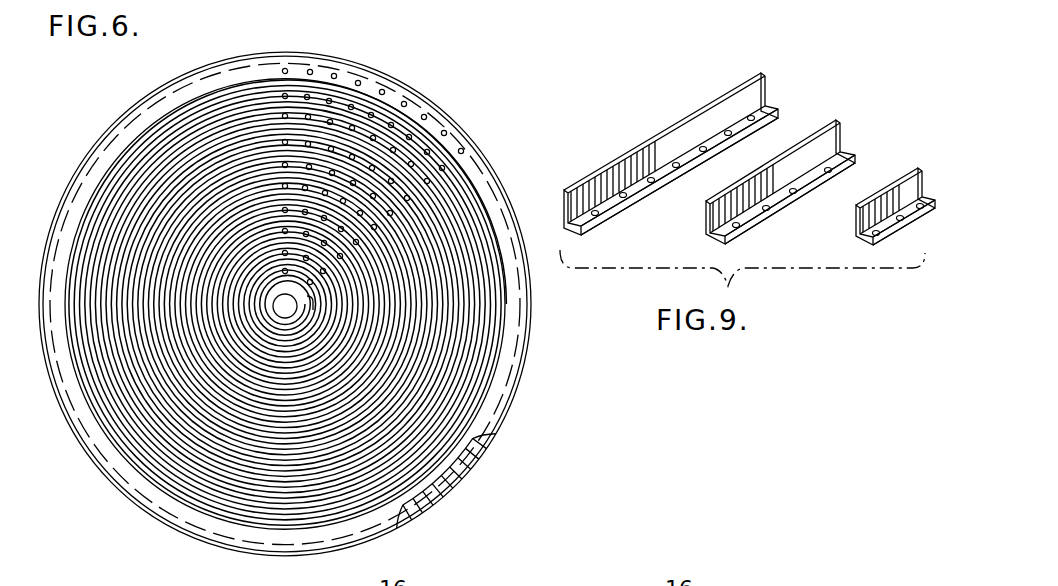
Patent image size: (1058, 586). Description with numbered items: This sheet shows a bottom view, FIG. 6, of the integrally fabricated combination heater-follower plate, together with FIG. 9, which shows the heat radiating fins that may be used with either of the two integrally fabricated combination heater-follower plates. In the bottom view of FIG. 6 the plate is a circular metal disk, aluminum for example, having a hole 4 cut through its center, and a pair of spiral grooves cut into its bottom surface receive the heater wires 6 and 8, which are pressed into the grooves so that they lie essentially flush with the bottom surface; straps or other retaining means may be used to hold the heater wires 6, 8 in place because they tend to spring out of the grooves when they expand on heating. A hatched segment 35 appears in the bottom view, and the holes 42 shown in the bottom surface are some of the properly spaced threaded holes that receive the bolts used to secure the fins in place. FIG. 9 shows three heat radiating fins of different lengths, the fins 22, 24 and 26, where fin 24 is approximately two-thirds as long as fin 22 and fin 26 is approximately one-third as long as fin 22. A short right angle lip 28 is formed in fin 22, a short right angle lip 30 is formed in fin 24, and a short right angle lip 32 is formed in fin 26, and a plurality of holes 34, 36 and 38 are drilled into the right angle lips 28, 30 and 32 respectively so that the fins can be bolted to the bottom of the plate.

In FIG. 6, the hole 4 is at (278, 306).
In FIG. 6, the heater wire 6 is at (413, 233).
In FIG. 6, the heater wire 8 is at (405, 325).
In FIG. 6, the hatched segment 35 is at (458, 468).
In FIG. 6, the holes 42 is at (303, 110).
In FIG. 9, the fin 22 is at (640, 130).
In FIG. 9, the fin 24 is at (753, 158).
In FIG. 9, the fin 26 is at (877, 176).
In FIG. 9, the right angle lip 28 is at (637, 189).
In FIG. 9, the right angle lip 30 is at (780, 198).
In FIG. 9, the right angle lip 32 is at (897, 220).
In FIG. 9, the holes 34 is at (718, 123).
In FIG. 9, the holes 36 is at (728, 219).
In FIG. 9, the holes 38 is at (862, 231).